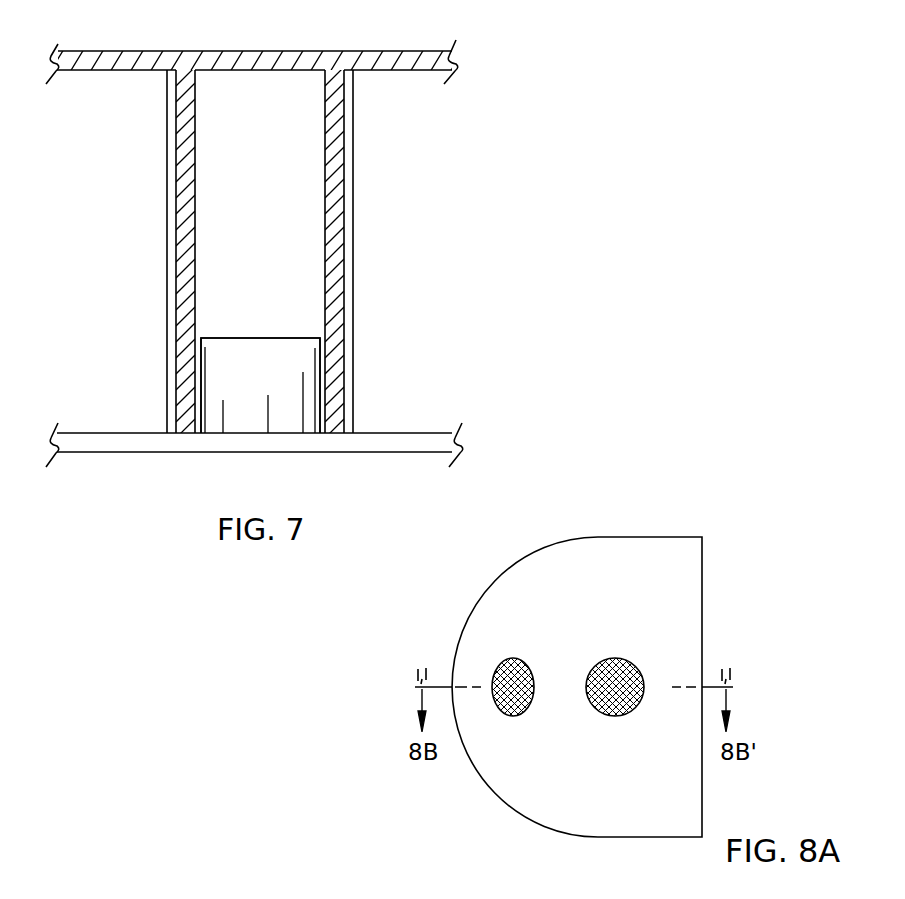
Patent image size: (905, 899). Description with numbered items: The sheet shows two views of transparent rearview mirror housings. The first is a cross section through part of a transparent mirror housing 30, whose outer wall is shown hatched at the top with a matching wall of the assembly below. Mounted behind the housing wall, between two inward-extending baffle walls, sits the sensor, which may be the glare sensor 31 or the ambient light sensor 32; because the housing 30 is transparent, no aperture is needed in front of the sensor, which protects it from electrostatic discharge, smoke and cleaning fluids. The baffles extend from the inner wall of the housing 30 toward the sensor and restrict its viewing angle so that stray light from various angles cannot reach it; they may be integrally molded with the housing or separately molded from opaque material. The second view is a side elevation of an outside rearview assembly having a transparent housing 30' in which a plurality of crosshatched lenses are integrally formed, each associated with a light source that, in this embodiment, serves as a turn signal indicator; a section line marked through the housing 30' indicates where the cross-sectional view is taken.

In FIG. 7, the mirror housing 30 is at (255, 42).
In FIG. 7, the glare sensor 31 is at (250, 418).
In FIG. 7, the ambient light sensor 32 is at (260, 385).
In FIG. 8A, the transparent housing 30' is at (577, 660).